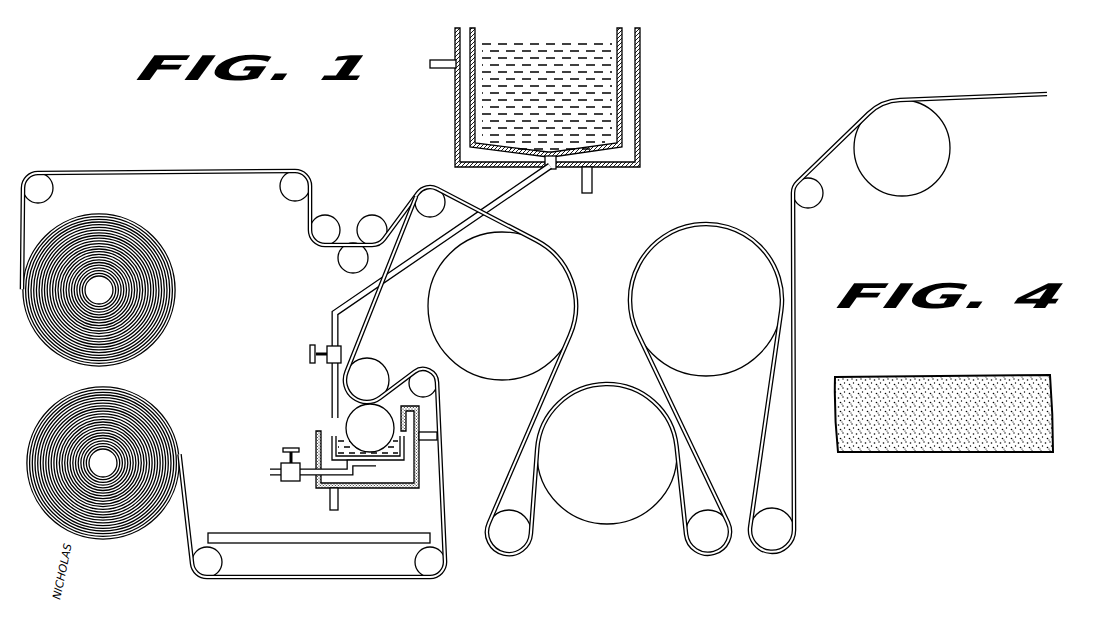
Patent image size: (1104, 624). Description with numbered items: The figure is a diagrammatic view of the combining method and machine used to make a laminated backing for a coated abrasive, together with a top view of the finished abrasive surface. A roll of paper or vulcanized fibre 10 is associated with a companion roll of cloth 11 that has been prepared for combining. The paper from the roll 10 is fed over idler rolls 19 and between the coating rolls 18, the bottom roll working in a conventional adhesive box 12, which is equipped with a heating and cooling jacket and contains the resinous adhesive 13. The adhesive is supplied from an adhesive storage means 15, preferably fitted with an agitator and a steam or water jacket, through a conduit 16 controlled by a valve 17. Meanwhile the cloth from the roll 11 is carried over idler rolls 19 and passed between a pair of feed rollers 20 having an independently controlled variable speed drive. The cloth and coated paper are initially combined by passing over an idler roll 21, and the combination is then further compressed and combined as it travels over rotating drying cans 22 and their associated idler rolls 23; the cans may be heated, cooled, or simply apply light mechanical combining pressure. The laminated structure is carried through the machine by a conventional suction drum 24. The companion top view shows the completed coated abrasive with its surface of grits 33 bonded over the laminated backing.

In FIG. 1, the roll of paper or vulcanized fibre 10 is at (170, 461).
In FIG. 1, the companion roll of cloth 11 is at (158, 272).
In FIG. 1, the adhesive box 12 is at (318, 490).
In FIG. 1, the resinous adhesive 13 is at (397, 462).
In FIG. 1, the adhesive storage means 15 is at (643, 91).
In FIG. 1, the conduit 16 is at (514, 198).
In FIG. 1, the valve 17 is at (328, 350).
In FIG. 1, the coating rolls 18 is at (378, 372).
In FIG. 1, the idler rolls 19 is at (40, 184).
In FIG. 1, the feed rollers 20 is at (387, 207).
In FIG. 1, the idler roll 21 is at (432, 197).
In FIG. 1, the drying cans 22 is at (605, 374).
In FIG. 1, the idler rolls 23 is at (524, 542).
In FIG. 1, the suction drum 24 is at (940, 157).
In FIG. 4, the grits 33 is at (907, 441).